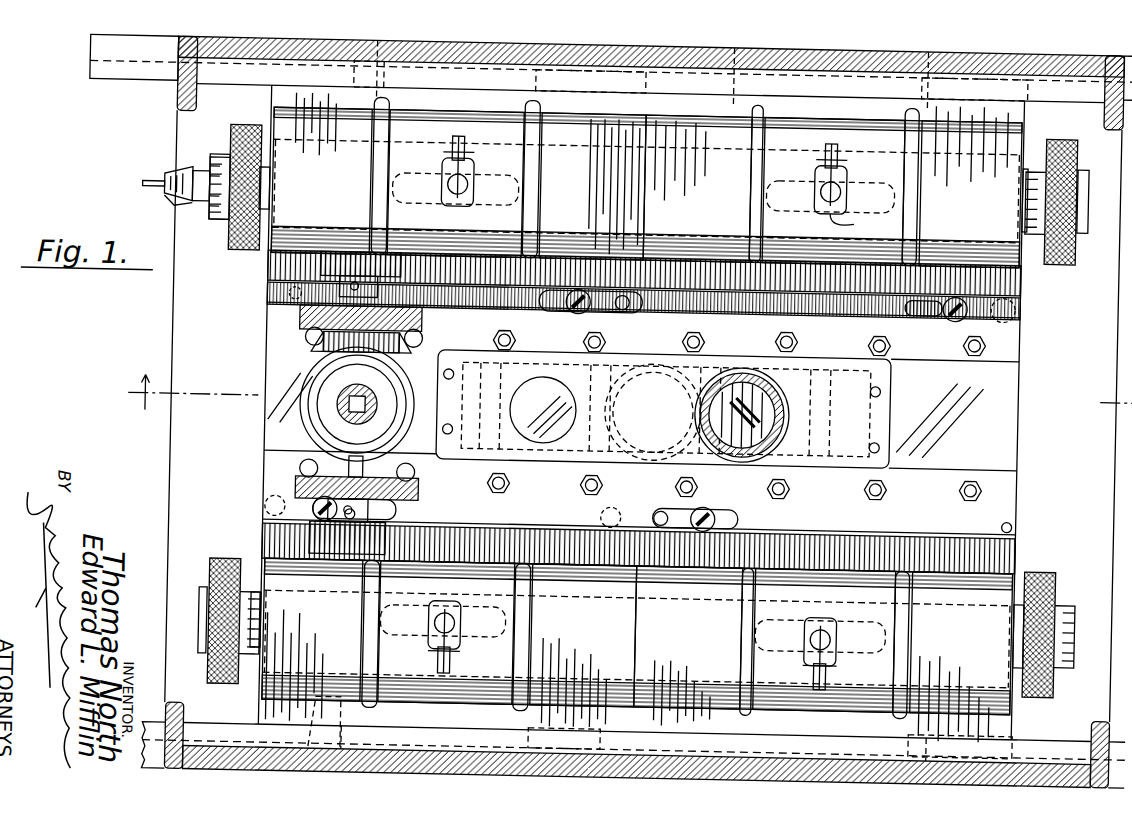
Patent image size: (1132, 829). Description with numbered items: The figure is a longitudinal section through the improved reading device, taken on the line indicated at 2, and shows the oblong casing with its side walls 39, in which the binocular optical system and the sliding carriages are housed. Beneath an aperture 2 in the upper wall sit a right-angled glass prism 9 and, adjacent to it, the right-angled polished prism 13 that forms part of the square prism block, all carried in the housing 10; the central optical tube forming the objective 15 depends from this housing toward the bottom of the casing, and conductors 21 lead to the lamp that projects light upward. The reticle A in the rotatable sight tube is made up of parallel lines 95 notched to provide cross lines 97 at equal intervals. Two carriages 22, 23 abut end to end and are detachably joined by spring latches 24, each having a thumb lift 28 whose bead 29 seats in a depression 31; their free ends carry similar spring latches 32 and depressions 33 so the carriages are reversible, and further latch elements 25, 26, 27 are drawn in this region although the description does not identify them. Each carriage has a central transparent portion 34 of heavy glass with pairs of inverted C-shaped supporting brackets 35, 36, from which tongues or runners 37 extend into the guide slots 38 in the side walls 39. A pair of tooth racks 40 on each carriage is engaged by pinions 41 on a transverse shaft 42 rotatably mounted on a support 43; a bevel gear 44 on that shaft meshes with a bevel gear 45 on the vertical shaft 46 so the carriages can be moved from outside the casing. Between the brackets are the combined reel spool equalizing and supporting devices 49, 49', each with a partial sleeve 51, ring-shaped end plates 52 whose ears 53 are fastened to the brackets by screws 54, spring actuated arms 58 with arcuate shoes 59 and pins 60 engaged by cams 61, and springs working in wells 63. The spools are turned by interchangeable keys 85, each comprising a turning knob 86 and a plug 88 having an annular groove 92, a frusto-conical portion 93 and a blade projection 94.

The aperture 2 is at (616, 402).
The right-angled glass prism 9 is at (510, 412).
The housing 10 is at (860, 470).
The right-angled polished prism 13 is at (706, 333).
The objective 15 is at (653, 412).
The conductors 21 is at (725, 518).
The carriage 22 is at (262, 540).
The carriage 23 is at (1030, 568).
The spring latch 24 is at (668, 508).
The nut 25 is at (488, 488).
The nut 26 is at (735, 566).
The screw 27 is at (576, 290).
The thumb lift 28 is at (598, 500).
The bead 29 is at (603, 519).
The depression 31 is at (652, 562).
The spring latch 32 is at (982, 318).
The depression 33 is at (1003, 519).
The transparent portion 34 is at (1000, 380).
The supporting bracket 35 is at (968, 110).
The supporting bracket 36 is at (1000, 680).
The tongue or runner 37 is at (295, 78).
The guide slot 38 is at (1030, 768).
The side wall 39 is at (644, 415).
The tooth rack 40 is at (840, 540).
The pinion 41 is at (345, 560).
The shaft 42 is at (365, 448).
The support 43 is at (297, 492).
The bevel gear 44 is at (300, 352).
The bevel gear 45 is at (310, 360).
The shaft 46 is at (330, 430).
The combined reel spool equalizing and supporting device 49 is at (648, 125).
The combined reel spool equalizing and supporting device 49' is at (636, 706).
The partial sleeve 51 is at (900, 604).
The ring-shaped end plate 52 is at (918, 620).
The ear 53 is at (906, 714).
The screw 54 is at (640, 415).
The spring actuated arm 58 is at (836, 625).
The arcuate shoe 59 is at (760, 650).
The pin 60 is at (833, 413).
The cam 61 is at (818, 648).
The well 63 is at (707, 413).
The key 85 is at (1060, 575).
The turning knob 86 is at (1060, 680).
The plug 88 is at (212, 163).
The annular groove 92 is at (172, 214).
The frusto-conical shaped portion 93 is at (172, 180).
The blade projection 94 is at (138, 194).
The parallel lines 95 is at (772, 390).
The cross lines 97 is at (770, 425).
The reticle A is at (778, 410).